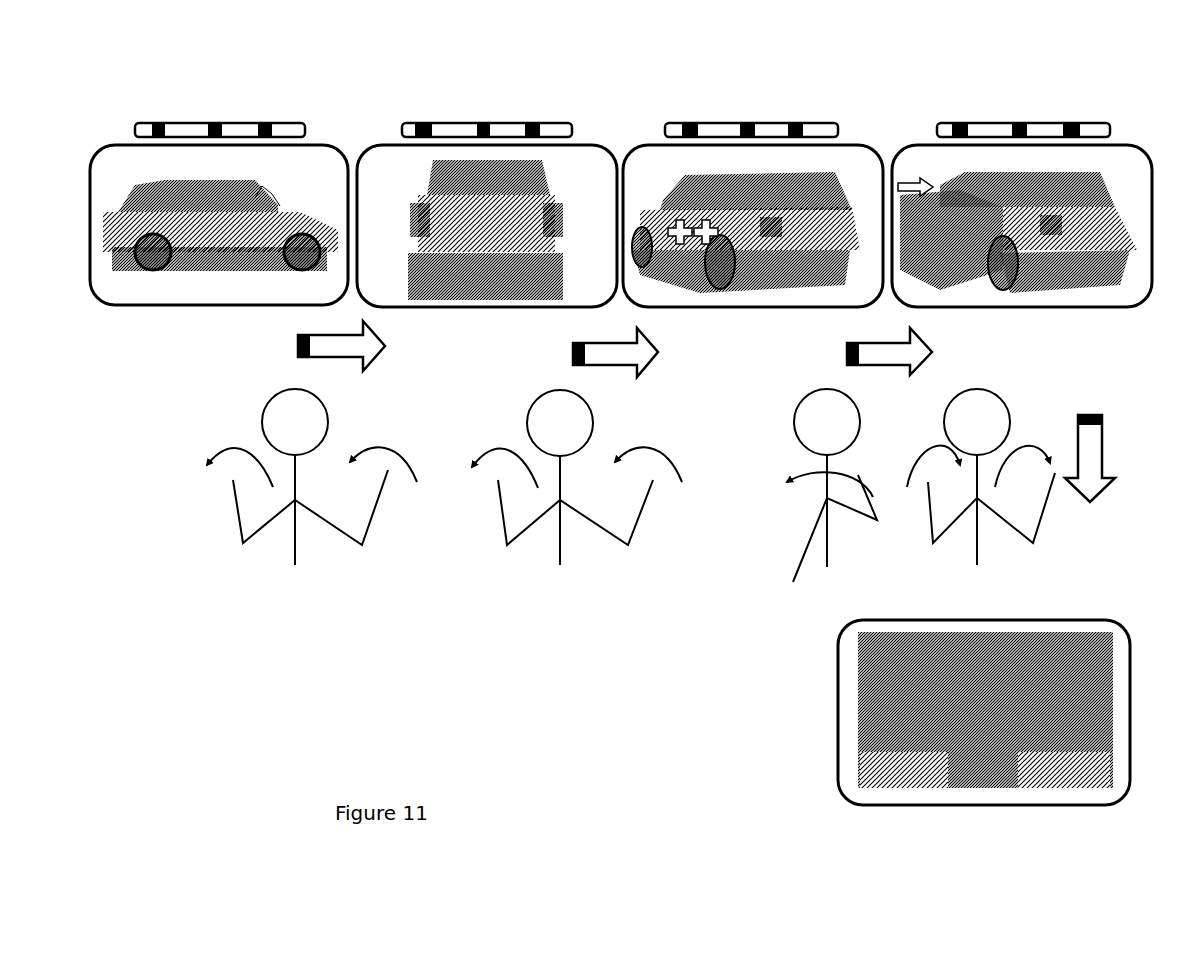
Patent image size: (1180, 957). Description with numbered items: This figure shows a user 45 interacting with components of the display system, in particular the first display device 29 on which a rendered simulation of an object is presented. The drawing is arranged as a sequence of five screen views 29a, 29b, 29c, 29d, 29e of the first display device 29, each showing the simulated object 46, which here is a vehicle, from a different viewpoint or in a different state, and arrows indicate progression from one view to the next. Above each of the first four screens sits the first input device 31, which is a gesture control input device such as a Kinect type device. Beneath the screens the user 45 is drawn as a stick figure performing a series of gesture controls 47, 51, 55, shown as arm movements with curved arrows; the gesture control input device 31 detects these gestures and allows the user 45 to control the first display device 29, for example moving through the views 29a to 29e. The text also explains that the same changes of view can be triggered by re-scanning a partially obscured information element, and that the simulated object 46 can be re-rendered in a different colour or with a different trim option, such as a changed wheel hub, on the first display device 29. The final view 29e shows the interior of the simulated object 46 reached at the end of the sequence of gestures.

The first display device 29 is at (148, 310).
The view 29a is at (219, 245).
The view 29b is at (487, 245).
The view 29c is at (753, 245).
The view 29d is at (1022, 245).
The view 29e is at (952, 712).
The first input device 31 is at (262, 122).
The user 45 is at (281, 435).
The simulated object 46 is at (262, 197).
The gesture control 47 is at (431, 457).
The gesture control 51 is at (815, 472).
The gesture control 55 is at (979, 450).